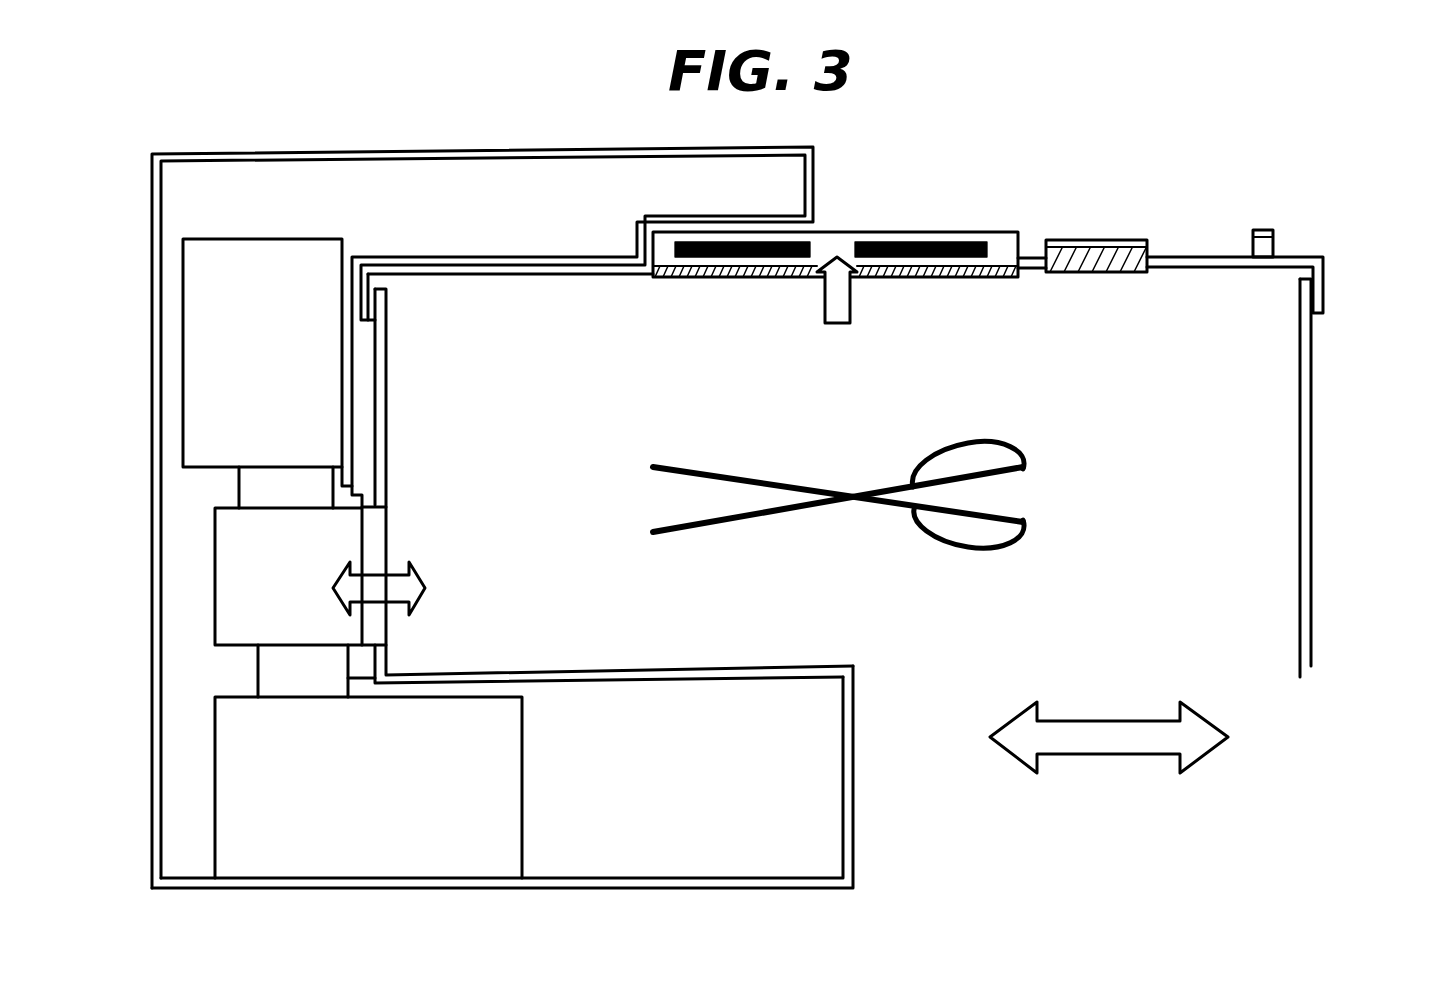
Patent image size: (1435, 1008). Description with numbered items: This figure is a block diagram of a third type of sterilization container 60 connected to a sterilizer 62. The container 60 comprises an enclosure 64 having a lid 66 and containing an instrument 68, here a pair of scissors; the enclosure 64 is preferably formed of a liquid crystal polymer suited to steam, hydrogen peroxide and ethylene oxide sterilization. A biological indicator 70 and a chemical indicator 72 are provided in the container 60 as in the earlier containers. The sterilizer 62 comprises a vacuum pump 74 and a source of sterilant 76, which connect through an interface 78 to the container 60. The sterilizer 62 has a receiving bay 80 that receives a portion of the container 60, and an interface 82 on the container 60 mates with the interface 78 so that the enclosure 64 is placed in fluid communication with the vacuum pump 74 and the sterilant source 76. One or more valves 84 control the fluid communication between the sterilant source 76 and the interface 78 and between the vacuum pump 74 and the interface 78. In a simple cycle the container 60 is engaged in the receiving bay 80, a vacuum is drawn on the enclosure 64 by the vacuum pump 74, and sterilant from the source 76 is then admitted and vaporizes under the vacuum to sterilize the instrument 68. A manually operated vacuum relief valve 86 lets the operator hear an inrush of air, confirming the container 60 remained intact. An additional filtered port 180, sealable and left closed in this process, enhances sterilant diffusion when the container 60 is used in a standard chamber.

The container 60 is at (1347, 465).
The sterilizer 62 is at (245, 122).
The enclosure 64 is at (1311, 577).
The lid 66 is at (1327, 270).
The instrument 68 is at (797, 512).
The biological indicator 70 is at (813, 248).
The chemical indicator 72 is at (962, 238).
The vacuum pump 74 is at (523, 797).
The source of sterilant 76 is at (342, 245).
The interface 78 is at (370, 537).
The receiving bay 80 is at (857, 687).
The interface 82 is at (388, 543).
The valve 84 is at (238, 648).
The vacuum relief valve 86 is at (1278, 243).
The filtered port 180 is at (1093, 238).